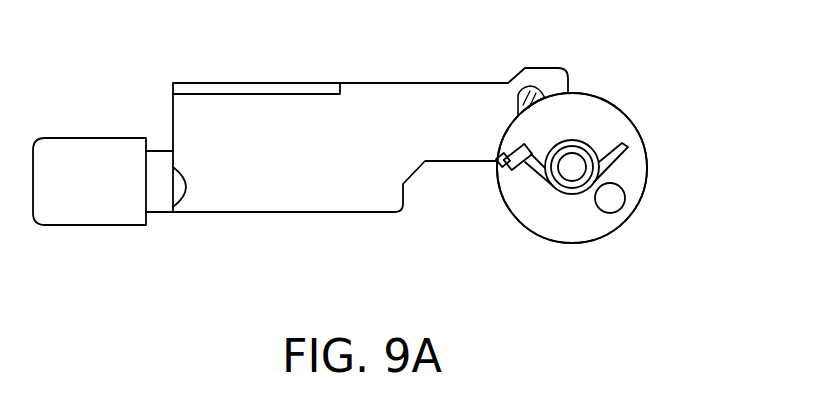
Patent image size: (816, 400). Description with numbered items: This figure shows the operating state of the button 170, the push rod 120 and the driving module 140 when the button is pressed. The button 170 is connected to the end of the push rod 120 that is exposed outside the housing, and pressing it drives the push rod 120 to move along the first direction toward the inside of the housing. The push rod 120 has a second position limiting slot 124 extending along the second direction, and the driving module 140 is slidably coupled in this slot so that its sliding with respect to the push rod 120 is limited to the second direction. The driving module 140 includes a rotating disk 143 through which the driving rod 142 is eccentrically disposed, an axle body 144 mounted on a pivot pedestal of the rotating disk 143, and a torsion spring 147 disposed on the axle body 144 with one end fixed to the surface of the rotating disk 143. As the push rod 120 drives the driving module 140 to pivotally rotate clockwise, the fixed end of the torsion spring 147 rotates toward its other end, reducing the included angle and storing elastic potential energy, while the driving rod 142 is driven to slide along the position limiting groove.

The push rod 120 is at (303, 198).
The second position limiting slot 124 is at (512, 110).
The driving module 140 is at (603, 260).
The driving rod 142 is at (613, 197).
The rotating disk 143 is at (585, 100).
The axle body 144 is at (572, 165).
The torsion spring 147 is at (628, 148).
The button 170 is at (90, 156).